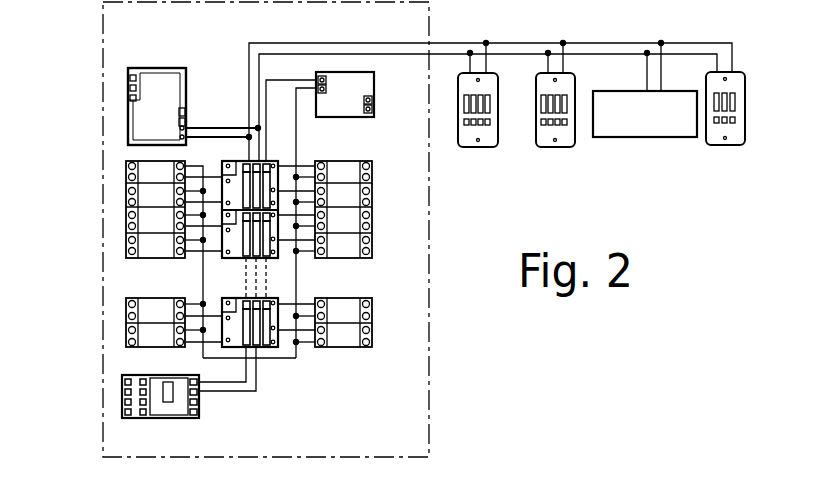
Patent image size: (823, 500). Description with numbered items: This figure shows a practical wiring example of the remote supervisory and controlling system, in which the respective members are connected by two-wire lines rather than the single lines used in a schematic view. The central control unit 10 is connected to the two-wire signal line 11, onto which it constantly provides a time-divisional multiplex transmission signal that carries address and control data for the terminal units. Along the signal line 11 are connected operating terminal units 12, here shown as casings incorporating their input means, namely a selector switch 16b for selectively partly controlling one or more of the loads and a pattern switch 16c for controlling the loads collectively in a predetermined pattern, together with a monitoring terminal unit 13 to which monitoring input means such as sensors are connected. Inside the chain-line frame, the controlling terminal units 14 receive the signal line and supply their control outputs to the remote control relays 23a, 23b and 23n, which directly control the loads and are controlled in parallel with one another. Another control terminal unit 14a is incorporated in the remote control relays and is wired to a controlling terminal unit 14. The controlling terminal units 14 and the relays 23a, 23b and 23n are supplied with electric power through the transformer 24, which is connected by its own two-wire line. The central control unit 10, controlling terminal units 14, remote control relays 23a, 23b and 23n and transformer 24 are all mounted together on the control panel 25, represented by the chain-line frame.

The central control unit 10 is at (153, 68).
The two-wire signal line 11 is at (247, 100).
The transformer 24 is at (353, 78).
The controlling terminal unit 14 is at (281, 164).
The control terminal unit 14a is at (198, 415).
The remote control relay 23a is at (130, 172).
The remote control relay 23b is at (350, 170).
The remote control relay 23n is at (345, 340).
The control panel 25 is at (413, 449).
The operating terminal unit 12 is at (481, 148).
The selector switch 16b is at (557, 148).
The pattern switch 16c is at (722, 146).
The monitoring terminal unit 13 is at (640, 138).